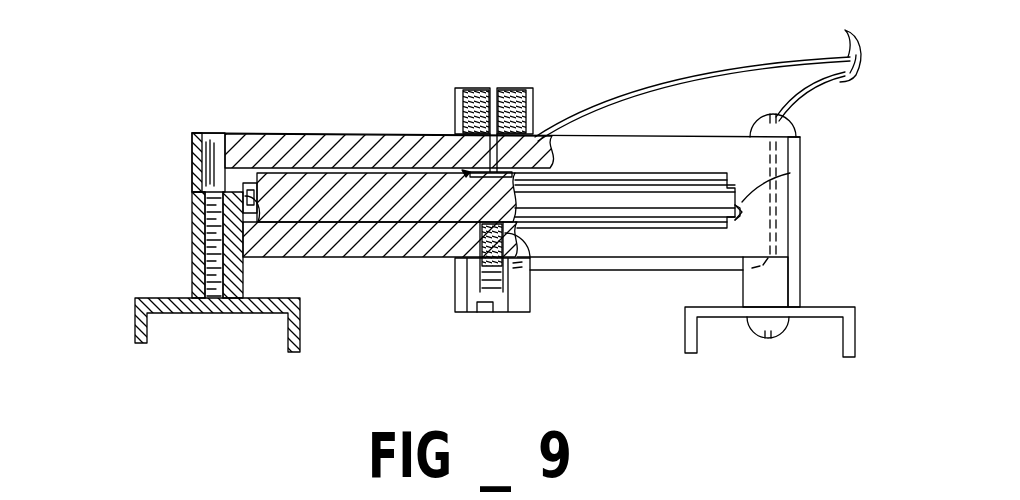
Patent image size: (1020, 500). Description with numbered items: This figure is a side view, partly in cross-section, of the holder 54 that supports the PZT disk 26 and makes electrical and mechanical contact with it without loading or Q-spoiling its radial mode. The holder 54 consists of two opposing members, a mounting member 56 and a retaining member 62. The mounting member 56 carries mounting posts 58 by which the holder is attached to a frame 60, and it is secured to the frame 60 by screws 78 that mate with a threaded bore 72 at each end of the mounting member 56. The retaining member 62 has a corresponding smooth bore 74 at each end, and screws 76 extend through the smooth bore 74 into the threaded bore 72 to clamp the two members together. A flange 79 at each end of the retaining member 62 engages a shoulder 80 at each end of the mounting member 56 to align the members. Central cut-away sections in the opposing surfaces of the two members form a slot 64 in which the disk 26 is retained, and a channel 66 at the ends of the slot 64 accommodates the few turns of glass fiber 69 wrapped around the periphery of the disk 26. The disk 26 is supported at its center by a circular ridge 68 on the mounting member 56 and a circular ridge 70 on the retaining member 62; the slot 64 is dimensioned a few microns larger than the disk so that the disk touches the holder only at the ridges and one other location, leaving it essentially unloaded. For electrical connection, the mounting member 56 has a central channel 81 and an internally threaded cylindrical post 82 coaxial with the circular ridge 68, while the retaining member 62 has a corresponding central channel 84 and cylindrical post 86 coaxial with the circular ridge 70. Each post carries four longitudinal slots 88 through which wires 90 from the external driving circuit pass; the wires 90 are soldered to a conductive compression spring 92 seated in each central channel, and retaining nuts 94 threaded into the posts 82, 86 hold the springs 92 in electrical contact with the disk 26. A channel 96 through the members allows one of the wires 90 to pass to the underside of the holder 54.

The PZT disk 26 is at (357, 177).
The holder 54 is at (182, 100).
The mounting member 56 is at (297, 247).
The mounting posts 58 is at (780, 287).
The frame 60 is at (137, 318).
The retaining member 62 is at (285, 132).
The slot 64 is at (258, 220).
The channel 66 is at (240, 193).
The circular ridge 68 is at (473, 224).
The glass fiber 69 is at (680, 195).
The circular ridge 70 is at (463, 172).
The threaded bore 72 is at (203, 262).
The smooth bore 74 is at (210, 167).
The screws 76 is at (787, 130).
The screws 78 is at (785, 333).
The flange 79 is at (790, 173).
The shoulder 80 is at (741, 212).
The central channel 81 is at (531, 259).
The internally threaded cylindrical post 82 is at (520, 312).
The central channel 84 is at (478, 88).
The internally threaded cylindrical post 86 is at (532, 98).
The longitudinal slots 88 is at (493, 90).
The wires 90 is at (700, 71).
The conductive compression spring 92 is at (467, 290).
The retaining nuts 94 is at (477, 304).
The channel 96 is at (802, 152).